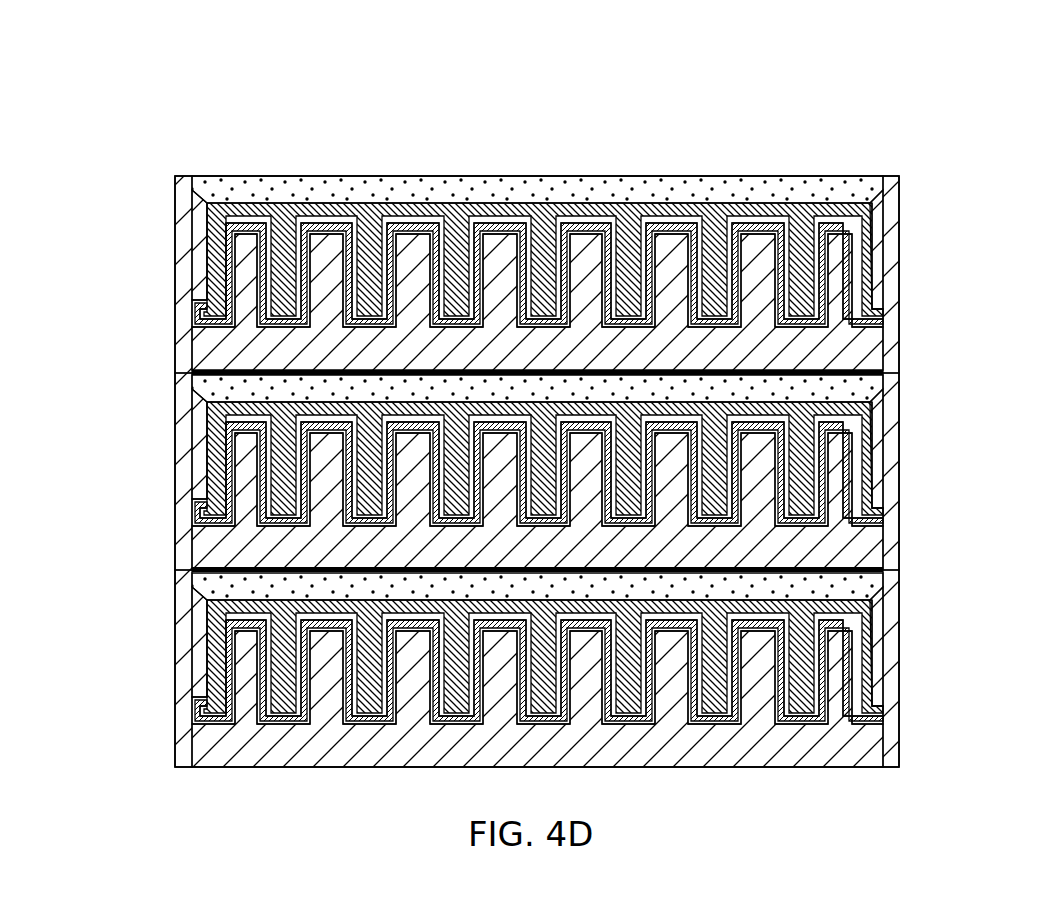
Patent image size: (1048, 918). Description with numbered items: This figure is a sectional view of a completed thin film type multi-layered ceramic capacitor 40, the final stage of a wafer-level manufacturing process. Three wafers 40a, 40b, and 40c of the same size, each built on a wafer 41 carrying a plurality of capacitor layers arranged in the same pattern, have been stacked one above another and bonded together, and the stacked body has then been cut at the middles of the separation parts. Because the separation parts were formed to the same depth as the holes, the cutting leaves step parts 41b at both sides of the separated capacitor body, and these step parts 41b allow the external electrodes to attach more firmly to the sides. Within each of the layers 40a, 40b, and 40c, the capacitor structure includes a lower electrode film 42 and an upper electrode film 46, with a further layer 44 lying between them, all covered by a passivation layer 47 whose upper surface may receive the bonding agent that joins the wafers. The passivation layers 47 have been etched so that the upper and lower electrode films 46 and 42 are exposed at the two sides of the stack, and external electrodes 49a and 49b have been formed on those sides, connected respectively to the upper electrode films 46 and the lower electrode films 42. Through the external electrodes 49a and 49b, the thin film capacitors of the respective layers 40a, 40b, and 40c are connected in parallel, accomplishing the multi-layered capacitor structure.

The thin film type multi-layered ceramic capacitor 40 is at (955, 155).
The first wafer (capacitor layer) 40a is at (880, 348).
The second wafer (capacitor layer) 40b is at (880, 545).
The third wafer (capacitor layer) 40c is at (880, 745).
The wafer 41 is at (192, 345).
The step part 41b is at (192, 690).
The lower electrode film 42 is at (833, 228).
The second insulating layer 44 is at (678, 222).
The upper electrode film 46 is at (497, 205).
The passivation layer 47 is at (313, 185).
The external electrode 49a is at (185, 458).
The external electrode 49b is at (885, 280).